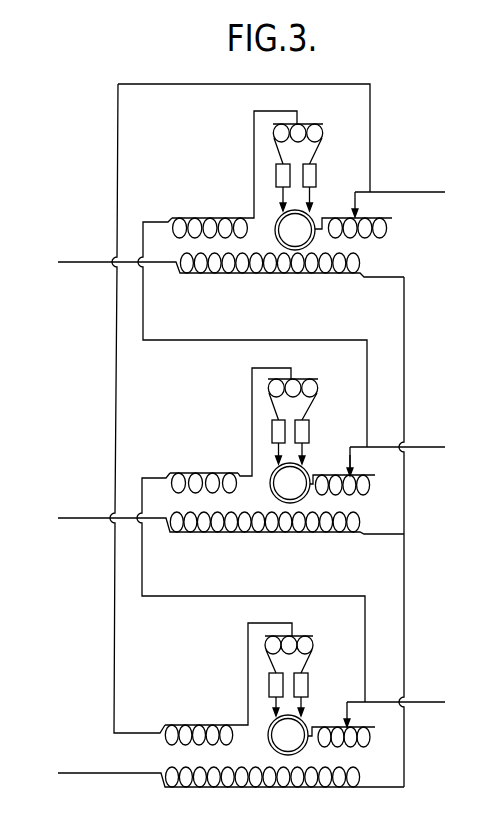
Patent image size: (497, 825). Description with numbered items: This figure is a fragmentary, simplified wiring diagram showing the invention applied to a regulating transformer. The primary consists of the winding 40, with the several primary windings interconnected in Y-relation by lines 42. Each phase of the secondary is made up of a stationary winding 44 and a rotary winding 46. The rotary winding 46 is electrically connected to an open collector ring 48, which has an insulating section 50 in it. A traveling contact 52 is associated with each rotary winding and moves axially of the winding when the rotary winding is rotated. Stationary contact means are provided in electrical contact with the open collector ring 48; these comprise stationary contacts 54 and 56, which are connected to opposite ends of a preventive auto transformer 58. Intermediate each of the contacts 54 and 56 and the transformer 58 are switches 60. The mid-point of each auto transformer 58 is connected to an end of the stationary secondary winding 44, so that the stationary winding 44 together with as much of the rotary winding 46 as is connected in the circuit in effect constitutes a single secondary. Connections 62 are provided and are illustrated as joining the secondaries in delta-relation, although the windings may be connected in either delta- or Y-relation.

The primary winding 40 is at (265, 532).
The lines 42 is at (405, 372).
The stationary winding 44 is at (208, 472).
The rotary winding 46 is at (372, 485).
The open collector ring 48 is at (305, 468).
The insulating section 50 is at (307, 495).
The traveling contact 52 is at (352, 465).
The stationary contact 54 is at (272, 703).
The stationary contact 56 is at (303, 708).
The preventive auto transformer 58 is at (300, 637).
The switches 60 is at (308, 680).
The connections 62 is at (244, 340).